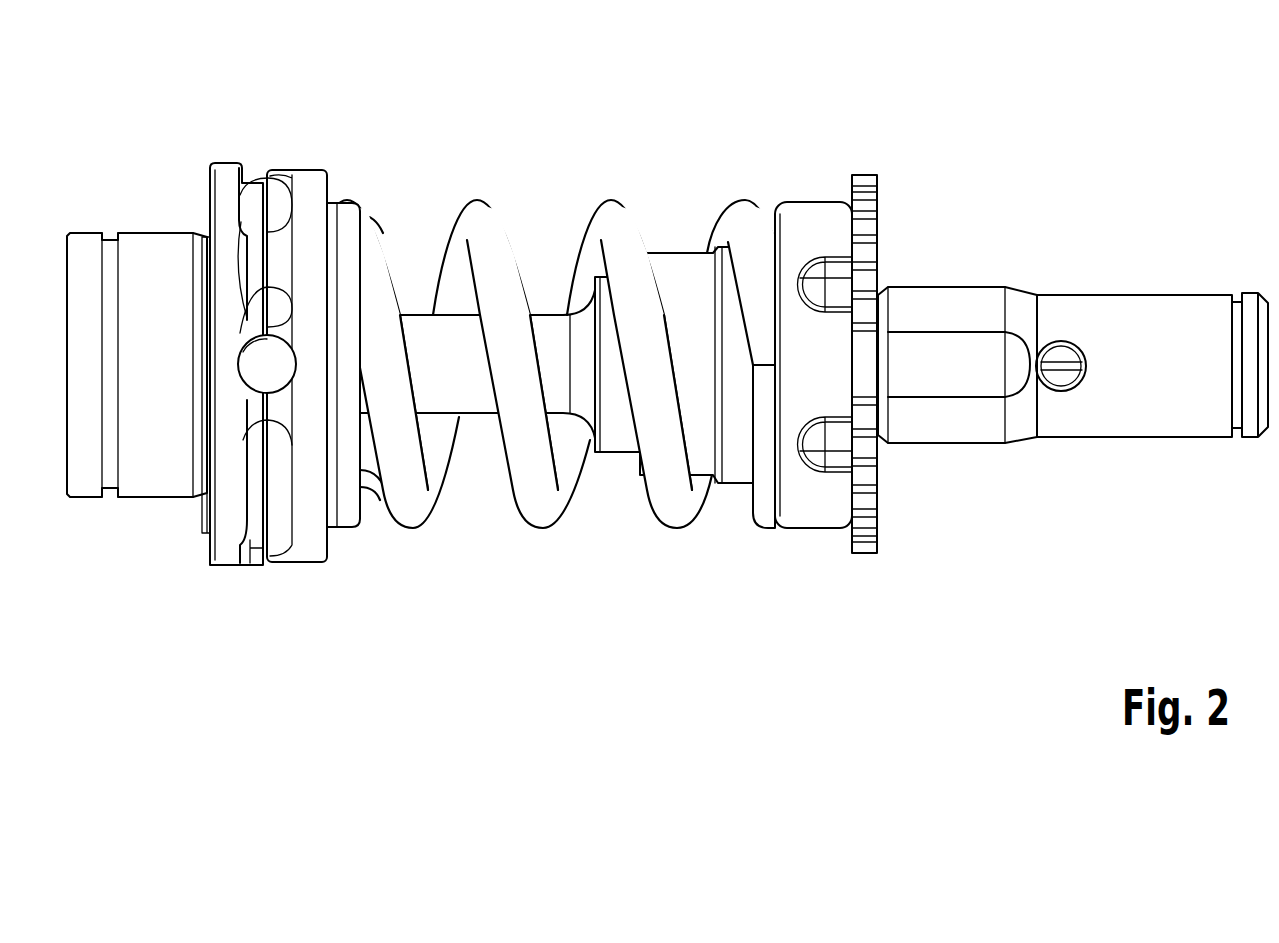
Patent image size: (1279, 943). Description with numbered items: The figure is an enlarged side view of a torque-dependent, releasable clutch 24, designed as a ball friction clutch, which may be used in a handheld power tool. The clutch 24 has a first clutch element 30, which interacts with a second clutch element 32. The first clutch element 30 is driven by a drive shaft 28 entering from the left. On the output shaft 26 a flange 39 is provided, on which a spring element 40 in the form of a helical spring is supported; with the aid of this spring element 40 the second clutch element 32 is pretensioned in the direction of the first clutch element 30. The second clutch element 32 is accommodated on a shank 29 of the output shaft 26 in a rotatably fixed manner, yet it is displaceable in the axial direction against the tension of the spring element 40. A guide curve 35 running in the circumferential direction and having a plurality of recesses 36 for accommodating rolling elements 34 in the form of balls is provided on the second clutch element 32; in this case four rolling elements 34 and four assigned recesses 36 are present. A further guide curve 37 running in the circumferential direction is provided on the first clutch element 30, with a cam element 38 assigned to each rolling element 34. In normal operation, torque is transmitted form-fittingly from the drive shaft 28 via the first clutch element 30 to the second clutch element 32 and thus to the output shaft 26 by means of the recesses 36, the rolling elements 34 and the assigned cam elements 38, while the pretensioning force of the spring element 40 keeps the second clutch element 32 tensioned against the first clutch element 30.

The clutch 24 is at (440, 117).
The output shaft 26 is at (942, 300).
The drive shaft 28 is at (152, 247).
The shank 29 is at (477, 398).
The first clutch element 30 is at (232, 177).
The second clutch element 32 is at (310, 172).
The rolling elements 34 is at (347, 530).
The guide curve 35 is at (255, 563).
The recesses 36 is at (268, 560).
The guide curve 37 is at (223, 563).
The cam element 38 is at (268, 372).
The flange 39 is at (800, 215).
The spring element 40 is at (485, 213).